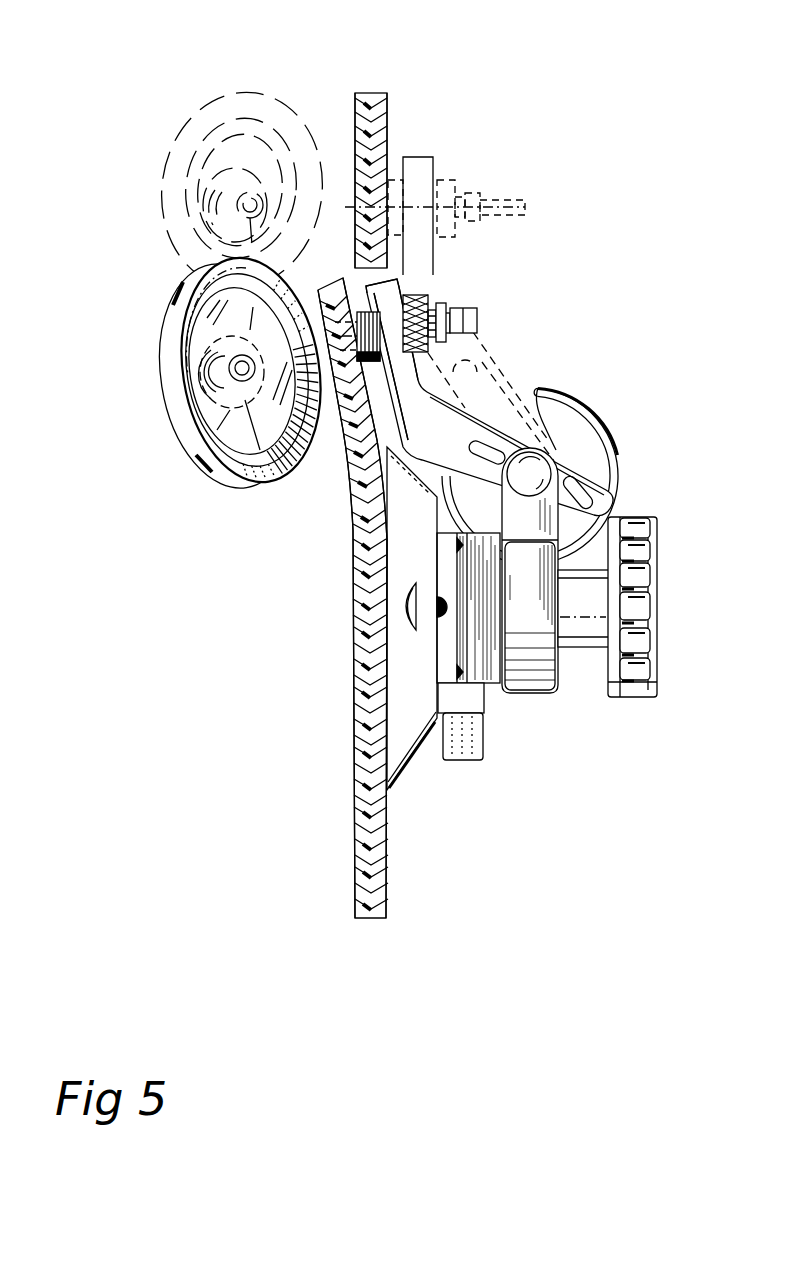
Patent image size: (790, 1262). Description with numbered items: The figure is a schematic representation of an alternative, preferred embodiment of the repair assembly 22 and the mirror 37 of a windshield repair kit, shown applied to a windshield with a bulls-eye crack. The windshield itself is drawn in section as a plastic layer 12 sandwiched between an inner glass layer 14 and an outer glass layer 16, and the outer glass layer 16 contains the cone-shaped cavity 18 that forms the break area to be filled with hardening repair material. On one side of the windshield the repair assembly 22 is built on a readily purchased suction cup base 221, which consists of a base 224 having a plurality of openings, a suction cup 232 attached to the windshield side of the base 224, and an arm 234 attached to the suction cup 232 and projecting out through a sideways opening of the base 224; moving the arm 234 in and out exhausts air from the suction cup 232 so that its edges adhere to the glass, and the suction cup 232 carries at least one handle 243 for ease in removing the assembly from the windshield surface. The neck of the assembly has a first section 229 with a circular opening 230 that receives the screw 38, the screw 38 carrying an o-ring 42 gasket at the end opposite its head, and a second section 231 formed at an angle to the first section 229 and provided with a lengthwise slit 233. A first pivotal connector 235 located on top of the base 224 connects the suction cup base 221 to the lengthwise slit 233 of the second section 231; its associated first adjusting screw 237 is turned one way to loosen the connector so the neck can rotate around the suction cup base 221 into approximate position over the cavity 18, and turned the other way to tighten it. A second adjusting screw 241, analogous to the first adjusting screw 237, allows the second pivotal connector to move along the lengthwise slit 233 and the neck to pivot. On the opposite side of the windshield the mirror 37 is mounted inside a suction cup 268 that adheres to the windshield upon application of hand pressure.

The plastic layer 12 is at (372, 92).
The inner glass layer 14 is at (362, 92).
The outer glass layer 16 is at (382, 92).
The cone-shaped cavity 18 is at (380, 205).
The repair assembly 22 is at (410, 673).
The mirror 37 is at (210, 148).
The screw 38 is at (455, 218).
The o-ring 42 is at (339, 392).
The suction cup base 221 is at (437, 700).
The base 224 is at (492, 692).
The first section 229 is at (433, 162).
The circular opening 230 is at (437, 203).
The second section 231 is at (473, 330).
The suction cup 232 is at (395, 778).
The lengthwise slit 233 is at (523, 407).
The arm 234 is at (462, 762).
The first pivotal connector 235 is at (528, 695).
The first adjusting screw 237 is at (580, 690).
The second adjusting screw 241 is at (607, 432).
The handle 243 is at (400, 609).
The suction cup 268 is at (165, 178).